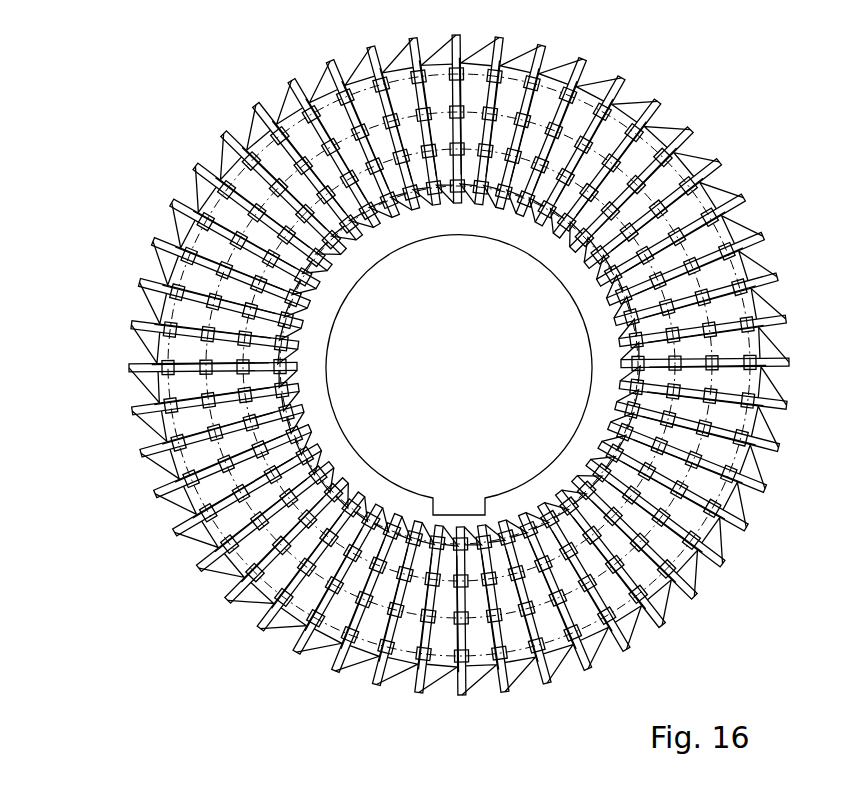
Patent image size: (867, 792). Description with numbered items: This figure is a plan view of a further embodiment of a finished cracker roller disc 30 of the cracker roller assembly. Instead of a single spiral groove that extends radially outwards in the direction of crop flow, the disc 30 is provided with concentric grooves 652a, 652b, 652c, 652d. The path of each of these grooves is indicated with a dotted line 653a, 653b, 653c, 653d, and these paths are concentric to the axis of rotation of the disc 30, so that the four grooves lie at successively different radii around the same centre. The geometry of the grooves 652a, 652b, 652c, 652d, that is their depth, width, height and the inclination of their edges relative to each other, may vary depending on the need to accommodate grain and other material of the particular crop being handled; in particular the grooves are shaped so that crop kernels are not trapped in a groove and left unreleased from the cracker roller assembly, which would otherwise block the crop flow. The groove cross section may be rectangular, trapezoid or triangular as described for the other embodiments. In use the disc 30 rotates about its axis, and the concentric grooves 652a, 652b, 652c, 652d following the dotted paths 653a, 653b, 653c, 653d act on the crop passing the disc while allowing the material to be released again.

The disc 30 is at (728, 146).
The concentric groove 652a is at (277, 110).
The concentric groove 652b is at (292, 217).
The concentric groove 652c is at (230, 148).
The concentric groove 652d is at (178, 238).
The dotted line indicating groove path 653a is at (163, 350).
The dotted line indicating groove path 653b is at (160, 398).
The dotted line indicating groove path 653c is at (175, 468).
The dotted line indicating groove path 653d is at (210, 545).